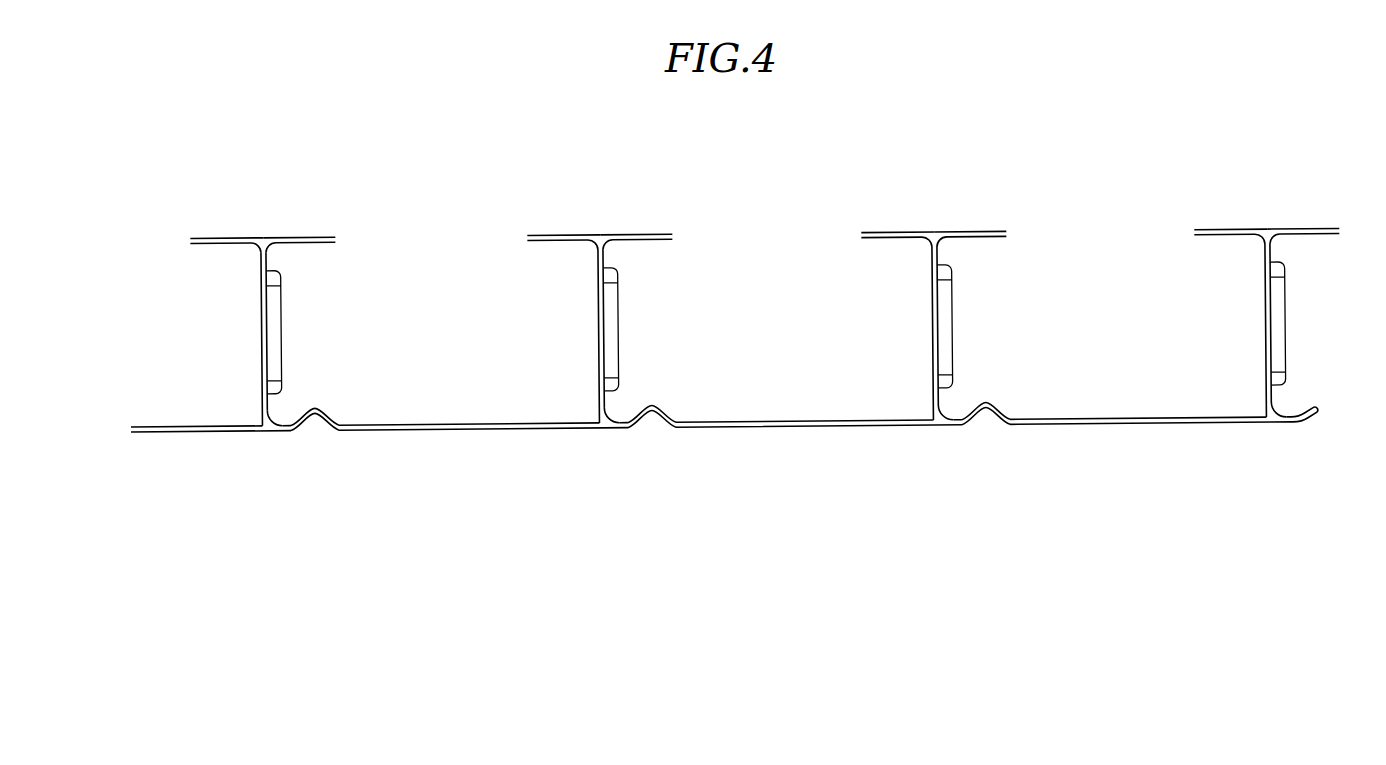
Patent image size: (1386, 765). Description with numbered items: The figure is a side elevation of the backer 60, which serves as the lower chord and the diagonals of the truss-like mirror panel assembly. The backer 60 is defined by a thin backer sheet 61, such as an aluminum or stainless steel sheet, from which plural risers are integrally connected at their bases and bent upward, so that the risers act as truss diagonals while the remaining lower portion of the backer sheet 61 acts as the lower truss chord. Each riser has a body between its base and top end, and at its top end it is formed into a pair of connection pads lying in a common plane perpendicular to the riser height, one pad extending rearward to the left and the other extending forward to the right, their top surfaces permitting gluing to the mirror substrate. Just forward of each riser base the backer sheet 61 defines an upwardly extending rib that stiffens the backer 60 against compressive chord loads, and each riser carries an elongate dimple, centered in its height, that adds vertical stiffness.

The backer 60 is at (378, 107).
The backer sheet 61 is at (472, 434).